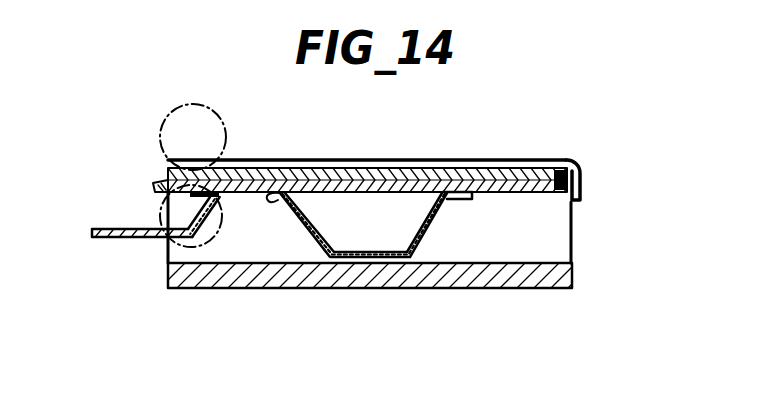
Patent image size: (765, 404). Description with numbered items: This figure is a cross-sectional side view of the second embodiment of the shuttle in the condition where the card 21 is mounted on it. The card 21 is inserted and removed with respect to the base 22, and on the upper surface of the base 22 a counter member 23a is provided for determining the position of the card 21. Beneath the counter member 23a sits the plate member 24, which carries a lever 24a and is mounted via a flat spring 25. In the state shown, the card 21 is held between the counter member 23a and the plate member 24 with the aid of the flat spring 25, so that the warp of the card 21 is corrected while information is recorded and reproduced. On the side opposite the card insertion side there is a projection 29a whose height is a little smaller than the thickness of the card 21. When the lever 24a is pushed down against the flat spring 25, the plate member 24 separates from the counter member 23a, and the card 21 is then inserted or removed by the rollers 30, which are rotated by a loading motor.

The card 21 is at (496, 170).
The base 22 is at (524, 272).
The counter member 23a is at (411, 167).
The plate member 24 is at (264, 188).
The lever 24a is at (111, 237).
The flat spring 25 is at (304, 234).
The projection 29a is at (568, 160).
The roller 30 is at (206, 113).